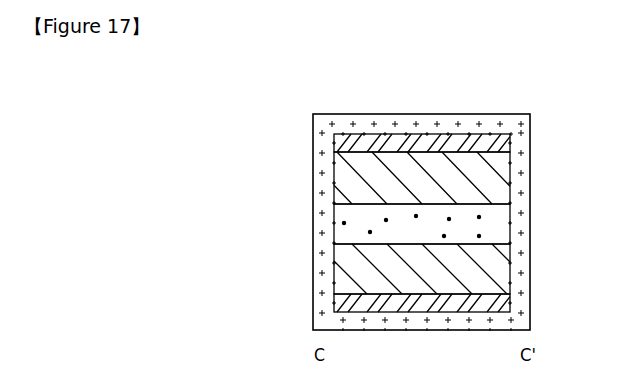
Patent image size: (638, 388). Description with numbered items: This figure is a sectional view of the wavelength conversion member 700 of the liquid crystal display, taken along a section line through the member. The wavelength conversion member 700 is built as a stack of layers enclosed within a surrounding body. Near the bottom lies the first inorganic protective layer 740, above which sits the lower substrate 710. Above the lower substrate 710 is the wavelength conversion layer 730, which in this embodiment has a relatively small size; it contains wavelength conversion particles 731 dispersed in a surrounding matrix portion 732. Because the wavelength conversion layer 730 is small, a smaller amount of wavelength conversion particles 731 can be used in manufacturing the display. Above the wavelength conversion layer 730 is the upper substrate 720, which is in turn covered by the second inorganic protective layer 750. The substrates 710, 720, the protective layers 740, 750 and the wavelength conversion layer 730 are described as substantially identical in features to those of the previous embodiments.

The wavelength conversion member 700 is at (523, 121).
The second inorganic protective layer 750 is at (512, 143).
The upper substrate 720 is at (512, 176).
The wavelength conversion layer 730 is at (477, 224).
The wavelength conversion particles 731 is at (480, 217).
The matrix layer 732 is at (512, 236).
The lower substrate 710 is at (512, 270).
The first inorganic protective layer 740 is at (512, 304).